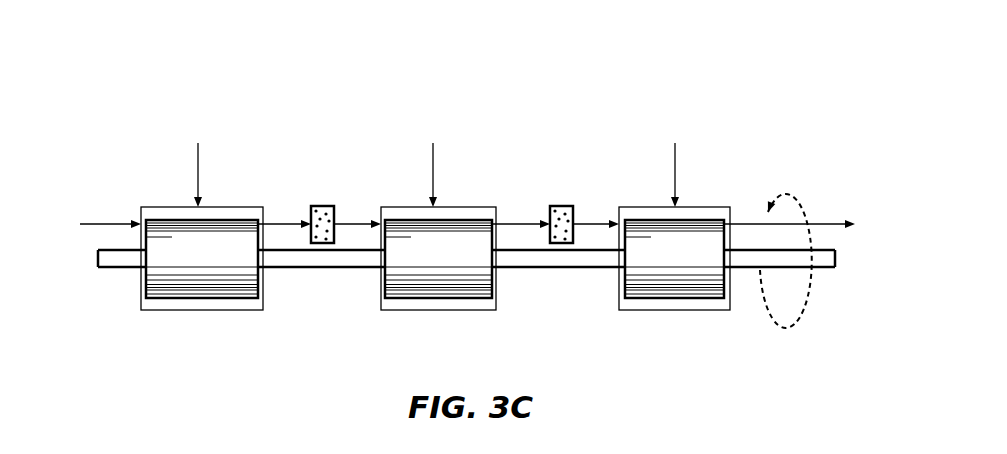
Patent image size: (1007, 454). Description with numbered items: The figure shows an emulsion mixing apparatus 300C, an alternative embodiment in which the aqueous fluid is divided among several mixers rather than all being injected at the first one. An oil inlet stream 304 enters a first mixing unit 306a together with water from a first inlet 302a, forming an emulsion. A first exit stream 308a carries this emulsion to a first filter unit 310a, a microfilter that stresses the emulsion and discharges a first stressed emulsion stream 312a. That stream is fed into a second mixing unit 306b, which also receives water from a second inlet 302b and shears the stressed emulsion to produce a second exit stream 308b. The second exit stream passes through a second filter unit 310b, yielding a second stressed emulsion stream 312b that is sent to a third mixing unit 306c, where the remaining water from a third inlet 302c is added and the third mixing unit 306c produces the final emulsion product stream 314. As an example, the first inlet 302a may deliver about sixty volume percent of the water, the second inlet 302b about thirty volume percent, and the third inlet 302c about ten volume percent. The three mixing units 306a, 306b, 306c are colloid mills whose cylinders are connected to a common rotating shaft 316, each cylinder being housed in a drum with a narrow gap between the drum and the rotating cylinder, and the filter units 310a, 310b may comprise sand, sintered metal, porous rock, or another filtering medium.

The apparatus 300C is at (755, 135).
The first inlet 302a is at (196, 163).
The second inlet 302b is at (433, 163).
The third inlet 302c is at (675, 163).
The oil inlet stream 304 is at (89, 224).
The first mixing unit 306a is at (224, 308).
The second mixing unit 306b is at (462, 309).
The third mixing unit 306c is at (702, 308).
The first exit stream 308a is at (287, 222).
The second exit stream 308b is at (520, 222).
The first filter unit 310a is at (323, 205).
The second filter unit 310b is at (562, 205).
The first stressed emulsion stream 312a is at (348, 222).
The second stressed emulsion stream 312b is at (587, 222).
The final emulsion product stream 314 is at (810, 226).
The rotating shaft 316 is at (123, 268).